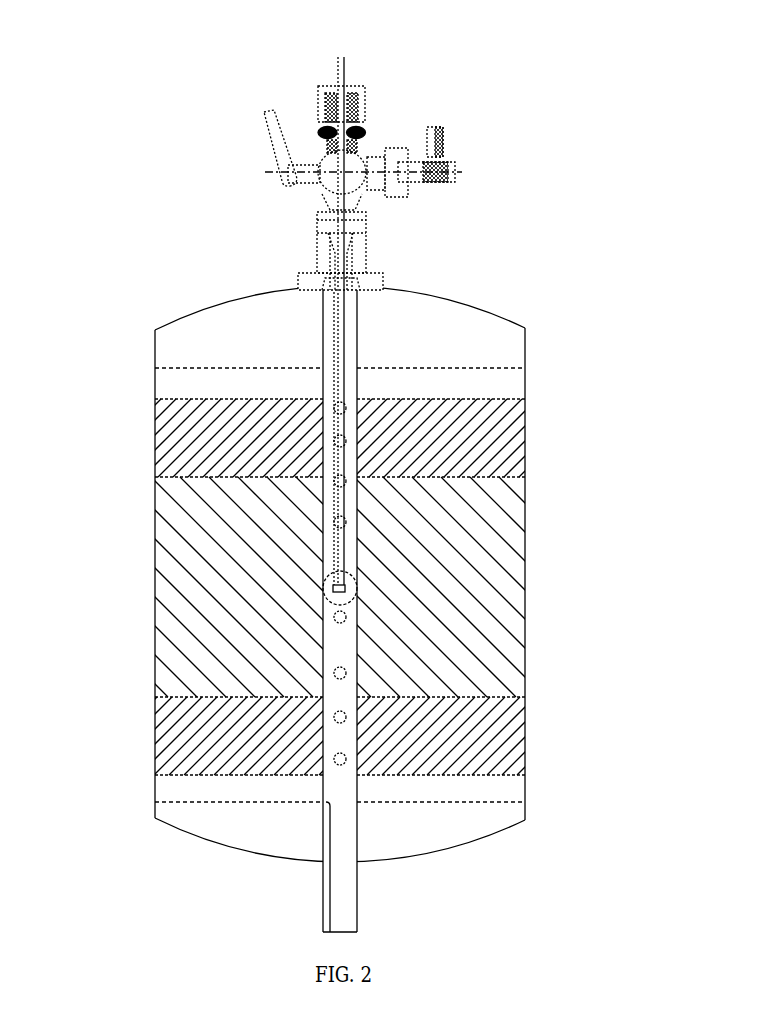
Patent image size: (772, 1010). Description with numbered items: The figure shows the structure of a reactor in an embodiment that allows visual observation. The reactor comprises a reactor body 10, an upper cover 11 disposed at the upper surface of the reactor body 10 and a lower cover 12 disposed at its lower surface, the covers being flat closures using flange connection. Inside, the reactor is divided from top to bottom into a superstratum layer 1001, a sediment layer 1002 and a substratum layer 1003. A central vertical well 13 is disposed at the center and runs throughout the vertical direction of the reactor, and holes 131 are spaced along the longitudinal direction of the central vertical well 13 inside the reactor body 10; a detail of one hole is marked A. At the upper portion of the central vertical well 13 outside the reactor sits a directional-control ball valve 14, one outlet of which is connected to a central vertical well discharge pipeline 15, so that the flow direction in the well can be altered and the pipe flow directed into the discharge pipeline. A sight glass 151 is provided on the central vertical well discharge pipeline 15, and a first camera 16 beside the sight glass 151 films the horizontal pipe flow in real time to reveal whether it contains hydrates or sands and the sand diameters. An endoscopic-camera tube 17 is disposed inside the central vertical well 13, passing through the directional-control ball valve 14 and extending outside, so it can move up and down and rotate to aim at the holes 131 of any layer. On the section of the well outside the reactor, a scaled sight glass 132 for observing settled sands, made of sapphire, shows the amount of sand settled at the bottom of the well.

The reactor body 10 is at (527, 750).
The upper cover 11 is at (213, 320).
The lower cover 12 is at (445, 838).
The central vertical well 13 is at (333, 788).
The hole 131 is at (349, 406).
The scaled sight glass for observing settled sands 132 is at (325, 895).
The directional-control ball valve 14 is at (270, 150).
The central vertical well discharge pipeline 15 is at (415, 185).
The sight glass 151 is at (441, 186).
The first camera 16 is at (446, 140).
The endoscopic-camera tube 17 is at (345, 72).
The superstratum layer 1001 is at (178, 453).
The sediment layer 1002 is at (172, 585).
The substratum layer 1003 is at (170, 752).
The detail A is at (352, 583).